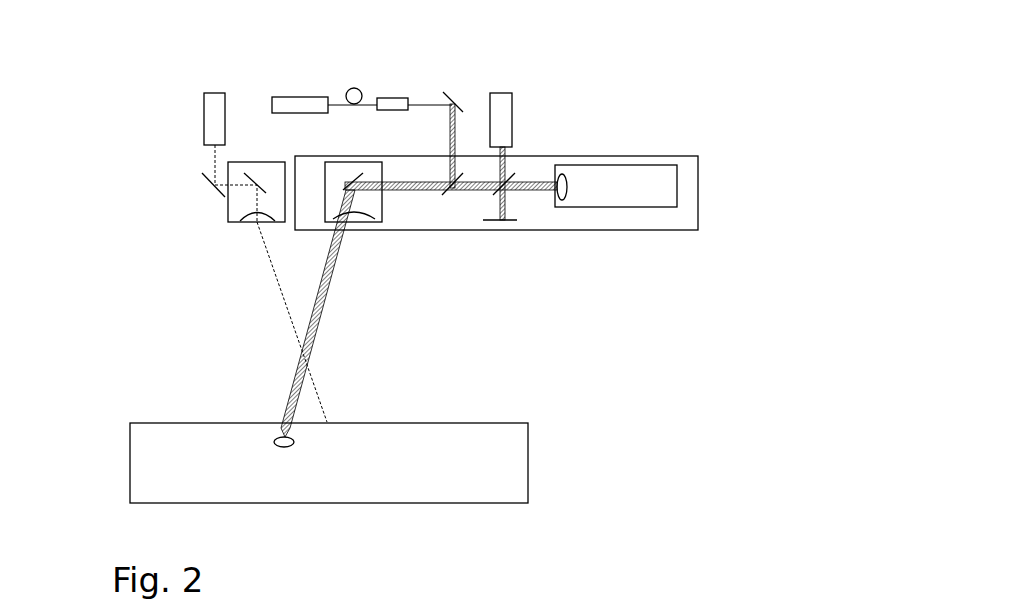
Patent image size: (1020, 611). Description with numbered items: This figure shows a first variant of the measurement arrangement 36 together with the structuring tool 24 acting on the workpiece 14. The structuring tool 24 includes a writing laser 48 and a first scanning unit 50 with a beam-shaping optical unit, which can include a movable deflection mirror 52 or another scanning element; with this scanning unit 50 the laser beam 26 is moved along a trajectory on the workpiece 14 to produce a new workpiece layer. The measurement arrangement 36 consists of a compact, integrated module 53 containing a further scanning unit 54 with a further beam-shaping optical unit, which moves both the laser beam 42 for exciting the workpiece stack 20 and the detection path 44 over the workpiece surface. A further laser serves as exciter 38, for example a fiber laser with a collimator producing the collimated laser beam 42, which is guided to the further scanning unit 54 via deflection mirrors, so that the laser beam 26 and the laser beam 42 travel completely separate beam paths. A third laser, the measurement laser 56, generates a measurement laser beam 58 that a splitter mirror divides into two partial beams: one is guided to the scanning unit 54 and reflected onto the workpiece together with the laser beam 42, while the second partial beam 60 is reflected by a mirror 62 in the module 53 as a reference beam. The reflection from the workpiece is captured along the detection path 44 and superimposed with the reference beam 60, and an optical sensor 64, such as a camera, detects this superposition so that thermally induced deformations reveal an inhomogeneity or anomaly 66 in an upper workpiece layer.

The workpiece 14 is at (477, 485).
The workpiece stack 20 is at (530, 462).
The structuring tool 24 is at (180, 176).
The laser beam 26 is at (282, 298).
The measurement arrangement 36 is at (626, 88).
The exciter 38 is at (292, 96).
The laser beam 42 is at (418, 101).
The detection path 44 is at (327, 320).
The laser 48 is at (203, 115).
The first scanning unit 50 is at (228, 207).
The deflection mirror 52 is at (246, 165).
The module 53 is at (699, 208).
The further scanning unit 54 is at (383, 208).
The measurement laser 56 is at (496, 92).
The measurement laser beam 58 is at (504, 170).
The second partial beam 60 is at (510, 208).
The mirror 62 is at (510, 230).
The optical sensor 64 is at (635, 178).
The inhomogeneity/anomaly 66 is at (297, 443).